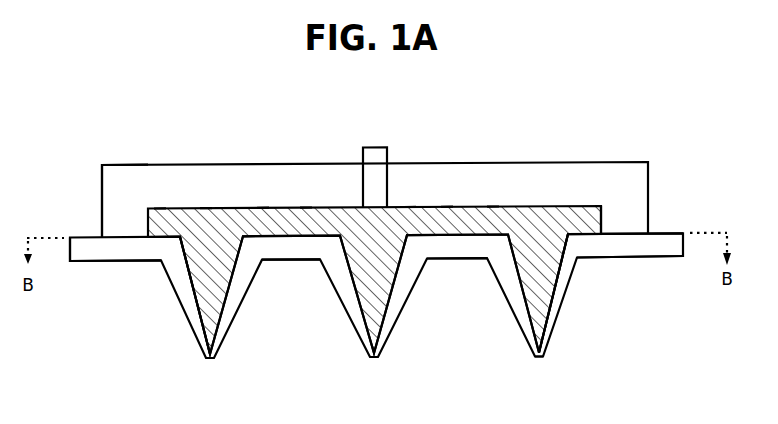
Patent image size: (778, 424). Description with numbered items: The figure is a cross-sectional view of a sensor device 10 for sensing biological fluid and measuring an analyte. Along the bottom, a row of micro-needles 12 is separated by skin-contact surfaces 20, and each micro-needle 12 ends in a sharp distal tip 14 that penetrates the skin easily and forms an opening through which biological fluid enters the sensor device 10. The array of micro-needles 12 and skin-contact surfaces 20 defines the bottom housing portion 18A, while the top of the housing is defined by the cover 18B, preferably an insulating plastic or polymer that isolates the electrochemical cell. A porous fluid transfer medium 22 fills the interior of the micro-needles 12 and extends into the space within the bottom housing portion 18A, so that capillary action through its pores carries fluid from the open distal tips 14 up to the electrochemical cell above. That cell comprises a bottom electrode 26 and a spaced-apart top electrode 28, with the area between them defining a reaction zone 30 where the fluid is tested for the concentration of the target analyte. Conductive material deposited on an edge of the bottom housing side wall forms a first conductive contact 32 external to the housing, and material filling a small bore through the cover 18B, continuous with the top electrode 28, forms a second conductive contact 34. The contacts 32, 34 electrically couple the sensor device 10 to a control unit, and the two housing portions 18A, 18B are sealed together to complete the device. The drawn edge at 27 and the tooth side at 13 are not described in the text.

The sensor device 10 is at (575, 131).
The micro-needle 12 is at (165, 284).
The tooth side wall 13 is at (198, 315).
The distal tip 14 is at (195, 358).
The bottom housing portion 18A is at (90, 257).
The cover 18B is at (113, 193).
The skin-contact surface 20 is at (292, 262).
The fluid transfer medium 22 is at (357, 250).
The bottom electrode 26 is at (160, 211).
The edge 27 is at (603, 231).
The top electrode 28 is at (206, 211).
The reaction zone 30 is at (306, 211).
The first conductive contact 32 is at (662, 234).
The second conductive contact 34 is at (378, 155).